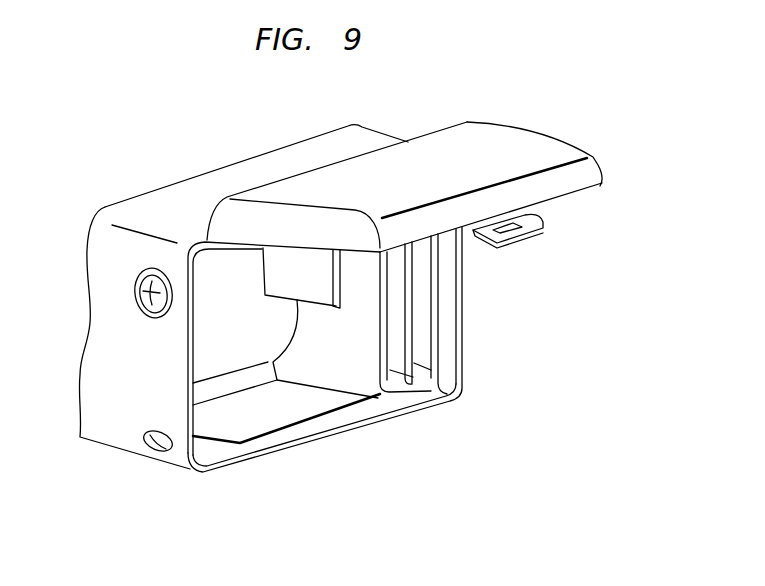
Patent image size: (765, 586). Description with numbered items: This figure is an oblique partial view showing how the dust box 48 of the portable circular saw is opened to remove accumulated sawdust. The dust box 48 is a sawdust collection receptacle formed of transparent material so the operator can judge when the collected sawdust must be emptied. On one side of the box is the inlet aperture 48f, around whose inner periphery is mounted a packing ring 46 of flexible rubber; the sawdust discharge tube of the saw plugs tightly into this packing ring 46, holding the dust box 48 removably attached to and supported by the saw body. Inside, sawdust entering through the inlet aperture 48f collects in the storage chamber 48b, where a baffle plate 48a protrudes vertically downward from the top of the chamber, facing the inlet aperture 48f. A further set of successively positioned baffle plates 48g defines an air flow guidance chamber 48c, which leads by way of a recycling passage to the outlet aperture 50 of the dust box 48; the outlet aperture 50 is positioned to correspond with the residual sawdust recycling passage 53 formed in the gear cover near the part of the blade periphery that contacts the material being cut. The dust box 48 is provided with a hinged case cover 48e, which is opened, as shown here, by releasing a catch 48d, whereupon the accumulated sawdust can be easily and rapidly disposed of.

The packing ring 46 is at (133, 323).
The dust box 48 is at (227, 182).
The baffle plate 48a is at (328, 277).
The storage chamber 48b is at (267, 410).
The air flow guidance chamber 48c is at (397, 355).
The catch 48d is at (538, 230).
The case cover 48e is at (517, 147).
The inlet aperture 48f is at (140, 290).
The baffle plates 48g is at (387, 330).
The outlet aperture 50 is at (150, 447).
The residual sawdust recycling passage 53 is at (363, 418).